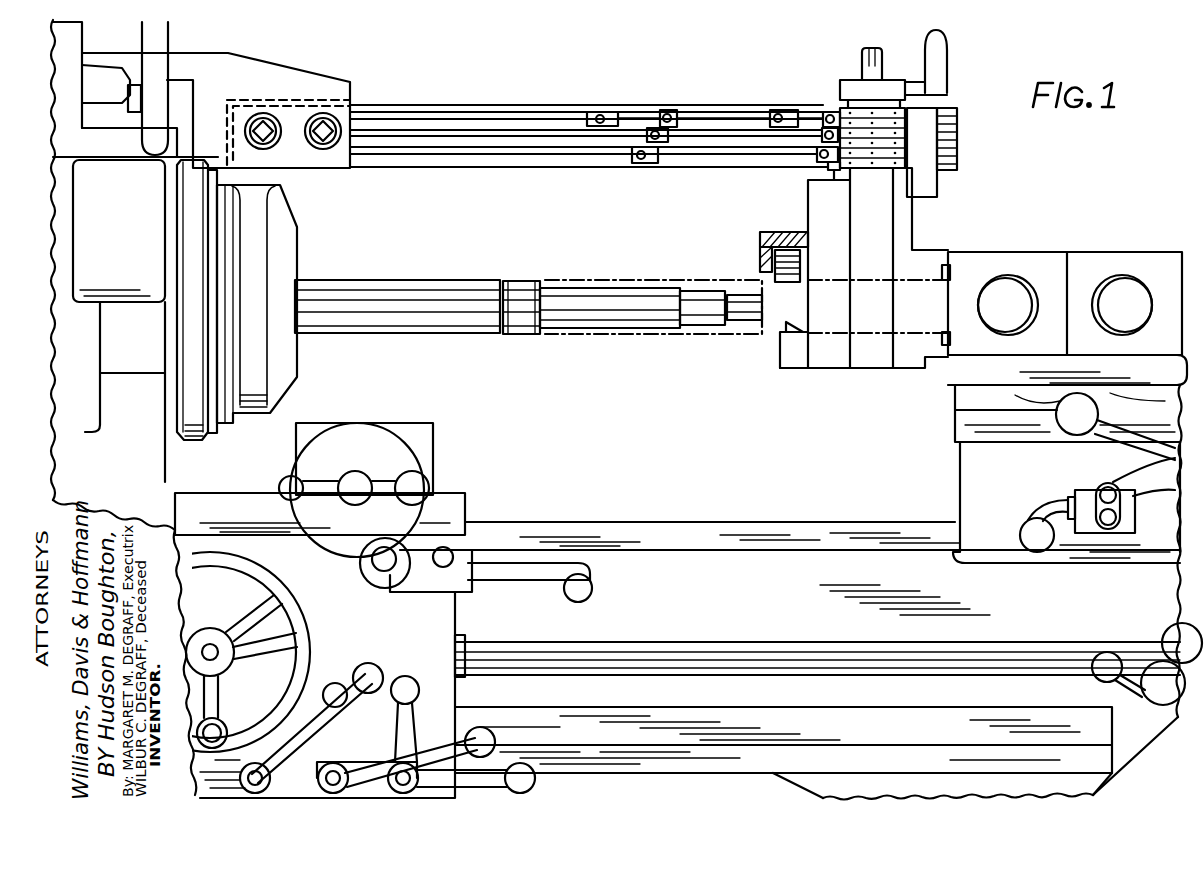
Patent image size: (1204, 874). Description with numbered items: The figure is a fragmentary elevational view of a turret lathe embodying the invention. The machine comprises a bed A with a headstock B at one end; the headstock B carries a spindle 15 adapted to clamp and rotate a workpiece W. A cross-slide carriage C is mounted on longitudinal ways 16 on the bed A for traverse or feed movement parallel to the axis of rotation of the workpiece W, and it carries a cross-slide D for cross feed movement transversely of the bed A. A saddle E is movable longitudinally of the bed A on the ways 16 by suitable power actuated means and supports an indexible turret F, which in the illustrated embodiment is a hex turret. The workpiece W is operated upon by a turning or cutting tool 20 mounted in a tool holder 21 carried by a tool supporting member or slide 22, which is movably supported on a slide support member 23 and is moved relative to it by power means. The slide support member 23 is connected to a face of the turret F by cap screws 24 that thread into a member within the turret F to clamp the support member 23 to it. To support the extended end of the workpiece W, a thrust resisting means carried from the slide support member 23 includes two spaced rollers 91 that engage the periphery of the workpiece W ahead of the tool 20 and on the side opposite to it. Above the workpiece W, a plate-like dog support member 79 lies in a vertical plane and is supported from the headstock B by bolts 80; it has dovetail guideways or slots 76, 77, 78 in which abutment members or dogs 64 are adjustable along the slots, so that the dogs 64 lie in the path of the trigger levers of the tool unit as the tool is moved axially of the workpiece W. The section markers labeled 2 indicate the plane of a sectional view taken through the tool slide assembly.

The spindle 15 is at (302, 248).
The longitudinal ways 16 is at (670, 530).
The turning or cutting tool 20 is at (786, 328).
The tool holder 21 is at (790, 360).
The tool supporting member or slide 22 is at (822, 210).
The slide support member 23 is at (918, 262).
The cap screws 24 is at (940, 277).
The abutment members or dogs 64 is at (665, 110).
The dovetail guideway or slot 76 is at (731, 117).
The dovetail guideway or slot 77 is at (552, 133).
The dovetail guideway or slot 78 is at (598, 150).
The dog support member 79 is at (462, 97).
The bolts 80 is at (270, 142).
The rollers 91 is at (766, 256).
The section line 2- 2 is at (803, 78).
The bed A is at (817, 637).
The headstock B is at (150, 482).
The cross-slide carriage C is at (440, 632).
The cross-slide D is at (430, 440).
The saddle E is at (985, 483).
The indexible turret F is at (1098, 242).
The workpiece W is at (457, 272).